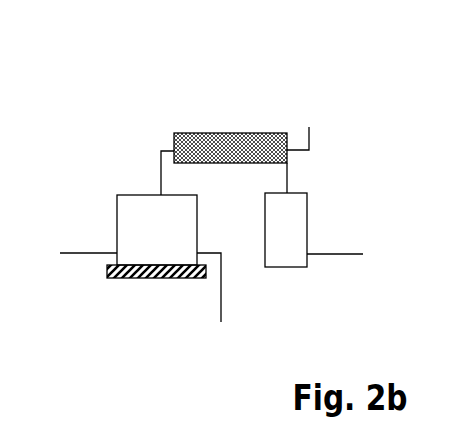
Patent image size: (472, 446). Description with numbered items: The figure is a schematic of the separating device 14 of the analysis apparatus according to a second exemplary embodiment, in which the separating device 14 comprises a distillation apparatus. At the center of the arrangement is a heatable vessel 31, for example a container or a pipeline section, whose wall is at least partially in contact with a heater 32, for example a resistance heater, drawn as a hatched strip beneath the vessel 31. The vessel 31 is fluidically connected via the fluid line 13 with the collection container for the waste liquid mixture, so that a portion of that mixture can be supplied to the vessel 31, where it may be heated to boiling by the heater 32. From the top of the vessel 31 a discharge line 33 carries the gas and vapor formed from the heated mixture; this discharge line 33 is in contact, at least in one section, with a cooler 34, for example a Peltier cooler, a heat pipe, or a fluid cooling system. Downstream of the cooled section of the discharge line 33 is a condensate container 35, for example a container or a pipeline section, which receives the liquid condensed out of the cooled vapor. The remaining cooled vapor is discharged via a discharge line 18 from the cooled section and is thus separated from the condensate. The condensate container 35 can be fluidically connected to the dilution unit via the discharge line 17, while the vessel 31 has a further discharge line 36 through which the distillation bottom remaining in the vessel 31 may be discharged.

The separating device 14 is at (142, 108).
The fluid line 13 is at (92, 257).
The discharge line 17 is at (322, 253).
The discharge line 18 is at (310, 131).
The heatable vessel 31 is at (143, 218).
The heater 32 is at (147, 278).
The discharge line 33 is at (161, 158).
The cooler 34 is at (243, 133).
The condensate container 35 is at (292, 204).
The discharge line 36 is at (221, 312).